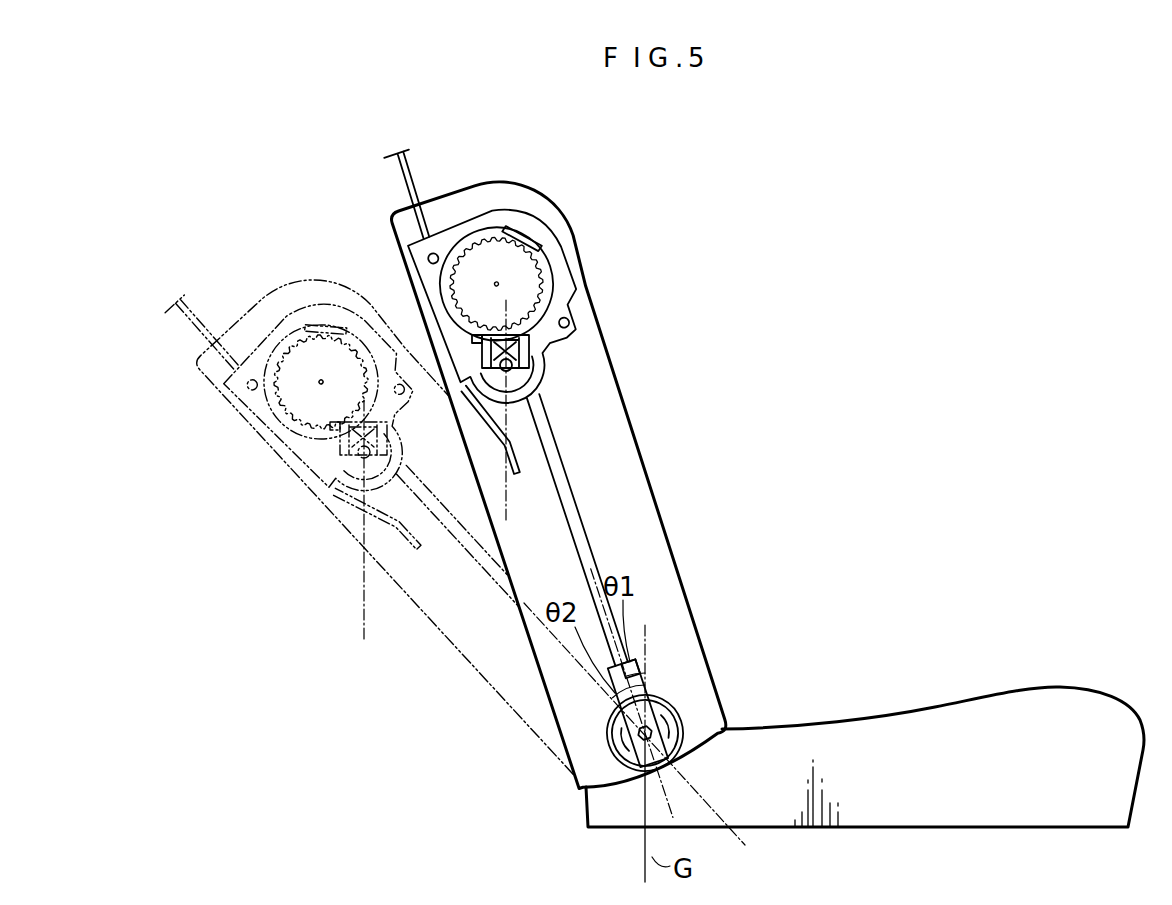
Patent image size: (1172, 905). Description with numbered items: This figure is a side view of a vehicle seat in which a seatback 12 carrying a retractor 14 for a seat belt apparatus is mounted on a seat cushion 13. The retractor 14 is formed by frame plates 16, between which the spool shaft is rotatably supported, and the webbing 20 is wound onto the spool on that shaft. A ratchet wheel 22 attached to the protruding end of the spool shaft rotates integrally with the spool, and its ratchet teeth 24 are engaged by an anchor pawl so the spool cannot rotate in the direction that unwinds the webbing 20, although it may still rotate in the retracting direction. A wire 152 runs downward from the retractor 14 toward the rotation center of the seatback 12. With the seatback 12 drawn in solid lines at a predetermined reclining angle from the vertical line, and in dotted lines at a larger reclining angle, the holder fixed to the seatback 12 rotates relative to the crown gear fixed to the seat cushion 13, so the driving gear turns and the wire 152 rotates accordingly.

The seatback 12 is at (426, 466).
The seat cushion 13 is at (936, 704).
The retractor 14 is at (486, 204).
The frame plate 16 is at (516, 214).
The webbing 20 is at (396, 168).
The ratchet wheel 22 is at (550, 283).
The ratchet teeth 24 is at (538, 268).
The wire 152 is at (557, 470).